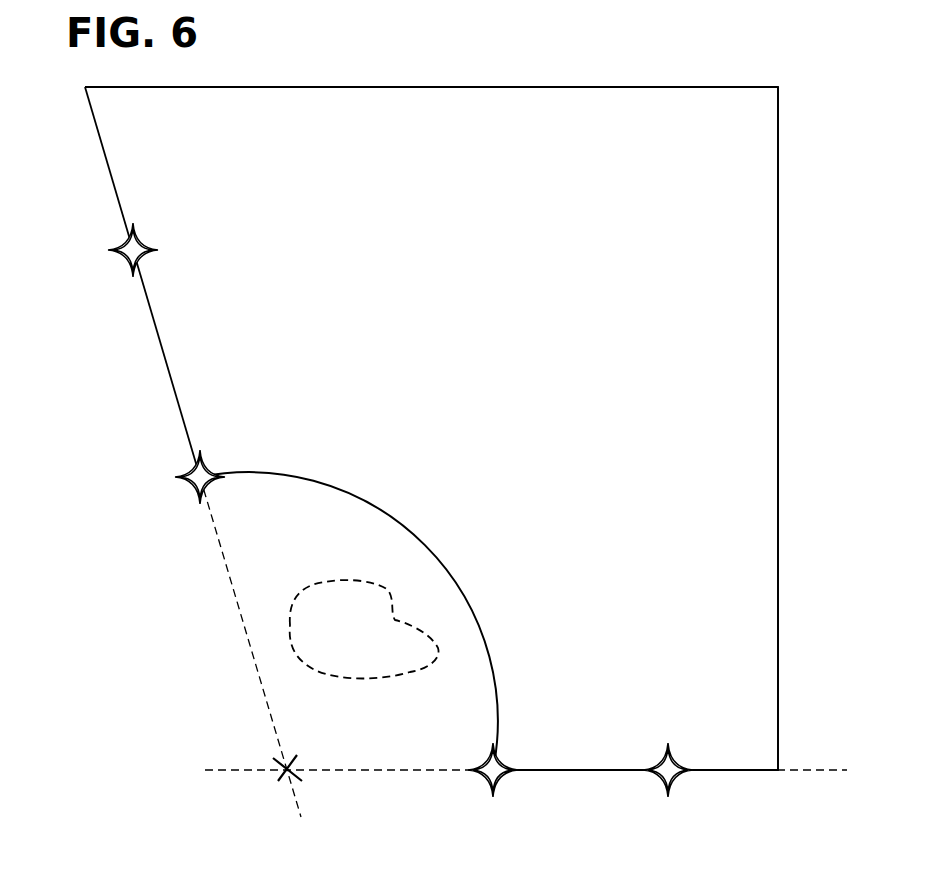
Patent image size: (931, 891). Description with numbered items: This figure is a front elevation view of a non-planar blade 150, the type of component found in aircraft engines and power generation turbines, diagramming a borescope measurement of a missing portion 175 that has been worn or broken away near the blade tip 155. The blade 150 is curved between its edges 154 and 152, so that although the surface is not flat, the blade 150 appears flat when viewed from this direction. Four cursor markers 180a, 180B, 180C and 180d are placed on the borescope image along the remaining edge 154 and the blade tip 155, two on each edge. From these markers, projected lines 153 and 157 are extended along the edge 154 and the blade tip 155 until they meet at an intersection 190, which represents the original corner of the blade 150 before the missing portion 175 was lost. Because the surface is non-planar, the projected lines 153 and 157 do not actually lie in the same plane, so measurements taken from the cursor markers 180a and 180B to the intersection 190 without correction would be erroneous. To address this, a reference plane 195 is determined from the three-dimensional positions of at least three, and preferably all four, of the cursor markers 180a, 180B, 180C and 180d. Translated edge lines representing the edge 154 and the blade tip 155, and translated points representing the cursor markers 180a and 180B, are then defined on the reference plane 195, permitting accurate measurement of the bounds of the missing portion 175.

The blade 150 is at (462, 340).
The edge 152 is at (779, 327).
The projected line 153 is at (228, 583).
The edge 154 is at (117, 195).
The blade tip 155 is at (718, 772).
The projected line 157 is at (395, 772).
The missing portion 175 is at (255, 531).
The cursor marker 180C is at (125, 255).
The cursor marker 180a is at (193, 475).
The cursor marker 180B is at (500, 768).
The cursor marker 180d is at (673, 763).
The intersection 190 is at (285, 762).
The reference plane 195 is at (375, 645).